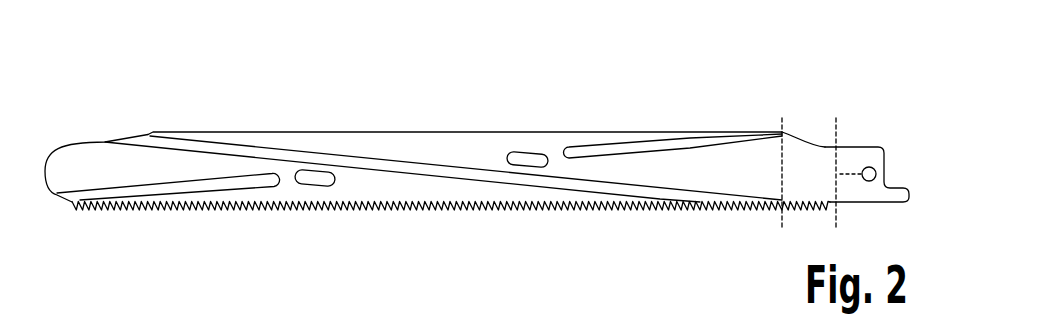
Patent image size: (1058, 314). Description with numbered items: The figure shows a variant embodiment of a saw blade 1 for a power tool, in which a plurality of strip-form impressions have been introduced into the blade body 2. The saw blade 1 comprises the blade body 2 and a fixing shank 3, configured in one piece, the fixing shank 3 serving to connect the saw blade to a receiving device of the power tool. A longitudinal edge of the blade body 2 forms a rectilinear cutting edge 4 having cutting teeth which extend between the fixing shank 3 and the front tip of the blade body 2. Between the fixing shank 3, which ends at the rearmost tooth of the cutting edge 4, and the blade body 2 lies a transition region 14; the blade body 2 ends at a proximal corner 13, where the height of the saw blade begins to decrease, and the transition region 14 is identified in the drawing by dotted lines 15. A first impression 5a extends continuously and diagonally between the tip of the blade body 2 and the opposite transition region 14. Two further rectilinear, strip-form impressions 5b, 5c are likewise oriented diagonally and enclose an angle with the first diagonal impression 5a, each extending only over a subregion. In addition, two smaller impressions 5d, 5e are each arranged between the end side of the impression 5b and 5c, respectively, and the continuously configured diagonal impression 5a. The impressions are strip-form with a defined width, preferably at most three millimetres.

The saw blade 1 is at (677, 107).
The blade body 2 is at (340, 132).
The fixing shank 3 is at (853, 196).
The cutting edge 4 is at (447, 203).
The first impression 5a is at (610, 191).
The impression 5b is at (613, 152).
The impression 5c is at (165, 186).
The smaller impression 5d is at (528, 158).
The smaller impression 5e is at (313, 187).
The proximal corner 13 is at (782, 132).
The transition region 14 is at (820, 163).
The dotted lines 15 is at (876, 169).